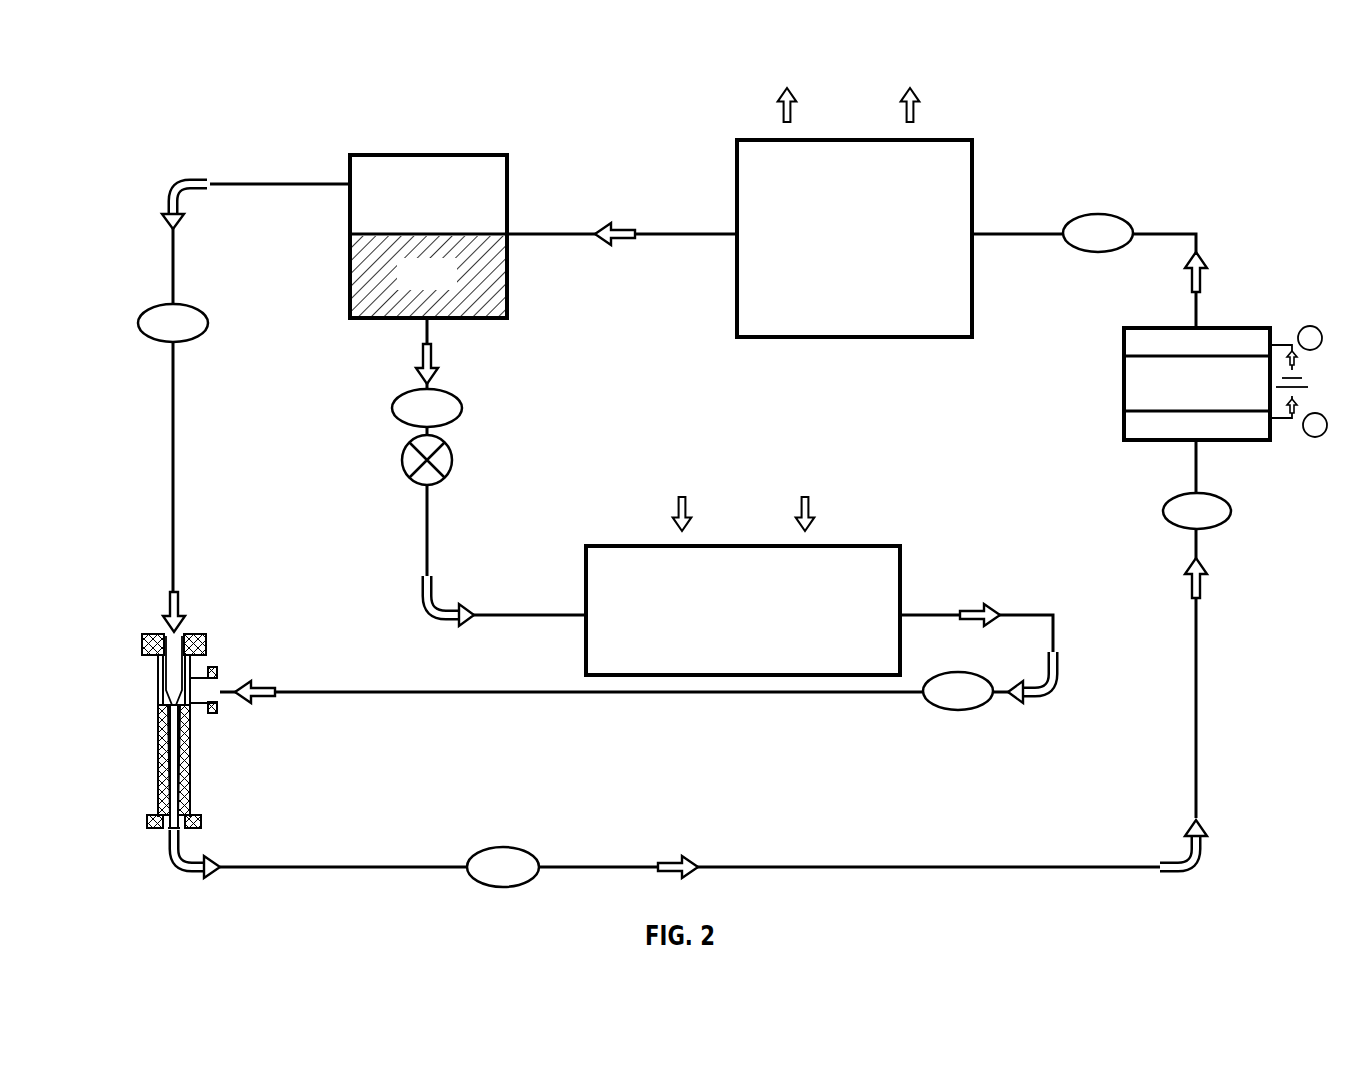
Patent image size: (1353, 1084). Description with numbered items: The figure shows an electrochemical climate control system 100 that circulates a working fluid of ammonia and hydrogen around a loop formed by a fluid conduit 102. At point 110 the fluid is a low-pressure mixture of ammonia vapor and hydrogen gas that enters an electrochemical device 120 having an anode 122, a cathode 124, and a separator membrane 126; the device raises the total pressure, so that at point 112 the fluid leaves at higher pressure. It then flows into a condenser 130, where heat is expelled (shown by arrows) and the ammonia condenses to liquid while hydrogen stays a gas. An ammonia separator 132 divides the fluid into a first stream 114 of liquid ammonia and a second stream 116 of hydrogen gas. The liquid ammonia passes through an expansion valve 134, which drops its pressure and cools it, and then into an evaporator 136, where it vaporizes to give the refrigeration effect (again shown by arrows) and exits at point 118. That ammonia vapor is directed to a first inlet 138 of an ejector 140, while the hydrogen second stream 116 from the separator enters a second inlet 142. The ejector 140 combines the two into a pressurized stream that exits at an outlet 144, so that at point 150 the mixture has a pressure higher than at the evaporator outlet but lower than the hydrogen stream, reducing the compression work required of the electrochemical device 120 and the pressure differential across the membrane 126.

The electrochemical climate control system 100 is at (224, 98).
The fluid conduit 102 is at (548, 234).
The point 110 is at (1197, 511).
The point 112 is at (1098, 233).
The first stream 114 is at (427, 408).
The second stream 116 is at (173, 323).
The point 118 is at (958, 691).
The electrochemical device 120 is at (1183, 354).
The anode 122 is at (1122, 432).
The cathode 124 is at (1122, 340).
The separator membrane 126 is at (1200, 384).
The condenser 130 is at (854, 238).
The ammonia separator 132 is at (452, 153).
The expansion valve 134 is at (410, 482).
The evaporator 136 is at (743, 610).
The first inlet 138 is at (218, 688).
The ejector 140 is at (197, 717).
The second inlet 142 is at (180, 636).
The outlet 144 is at (166, 832).
The point 150 is at (503, 867).